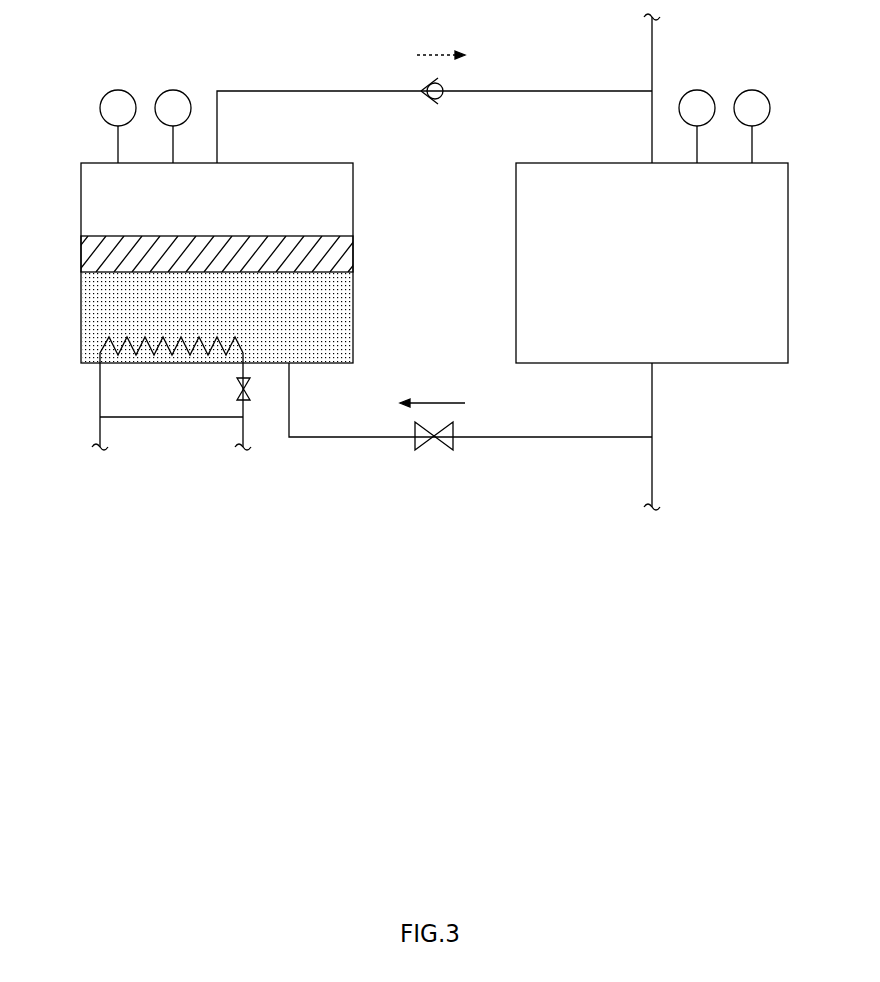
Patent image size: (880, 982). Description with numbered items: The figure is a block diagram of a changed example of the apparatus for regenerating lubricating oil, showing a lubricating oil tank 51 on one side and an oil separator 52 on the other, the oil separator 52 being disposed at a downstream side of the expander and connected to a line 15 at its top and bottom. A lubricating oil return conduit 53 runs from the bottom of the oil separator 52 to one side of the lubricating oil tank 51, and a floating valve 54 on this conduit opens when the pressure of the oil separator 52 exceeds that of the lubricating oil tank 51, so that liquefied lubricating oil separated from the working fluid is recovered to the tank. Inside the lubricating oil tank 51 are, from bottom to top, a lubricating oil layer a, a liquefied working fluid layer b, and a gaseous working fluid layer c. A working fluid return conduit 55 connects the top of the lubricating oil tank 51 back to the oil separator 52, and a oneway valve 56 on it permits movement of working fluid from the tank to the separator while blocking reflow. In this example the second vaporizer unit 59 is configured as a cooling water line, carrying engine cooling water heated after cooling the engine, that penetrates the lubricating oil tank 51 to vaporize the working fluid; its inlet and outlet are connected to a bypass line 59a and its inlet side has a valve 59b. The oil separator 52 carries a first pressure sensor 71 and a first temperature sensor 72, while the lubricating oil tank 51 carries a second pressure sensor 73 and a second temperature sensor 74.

The refrigerant pipe 15 is at (652, 53).
The lubricating oil tank 51 is at (81, 163).
The oil separator 52 is at (788, 260).
The lubricating oil return conduit 53 is at (552, 438).
The floating valve 54 is at (435, 437).
The working fluid return conduit 55 is at (320, 91).
The oneway valve 56 is at (427, 104).
The second vaporizer unit 59 is at (100, 340).
The bypass line 59a is at (170, 418).
The valve 59b is at (250, 392).
The first pressure sensor 71 is at (751, 90).
The first temperature sensor 72 is at (696, 90).
The second pressure sensor 73 is at (172, 90).
The second temperature sensor 74 is at (117, 90).
The lubricating oil layer a is at (88, 318).
The liquefied working fluid layer b is at (88, 253).
The gaseous working fluid layer c is at (88, 199).